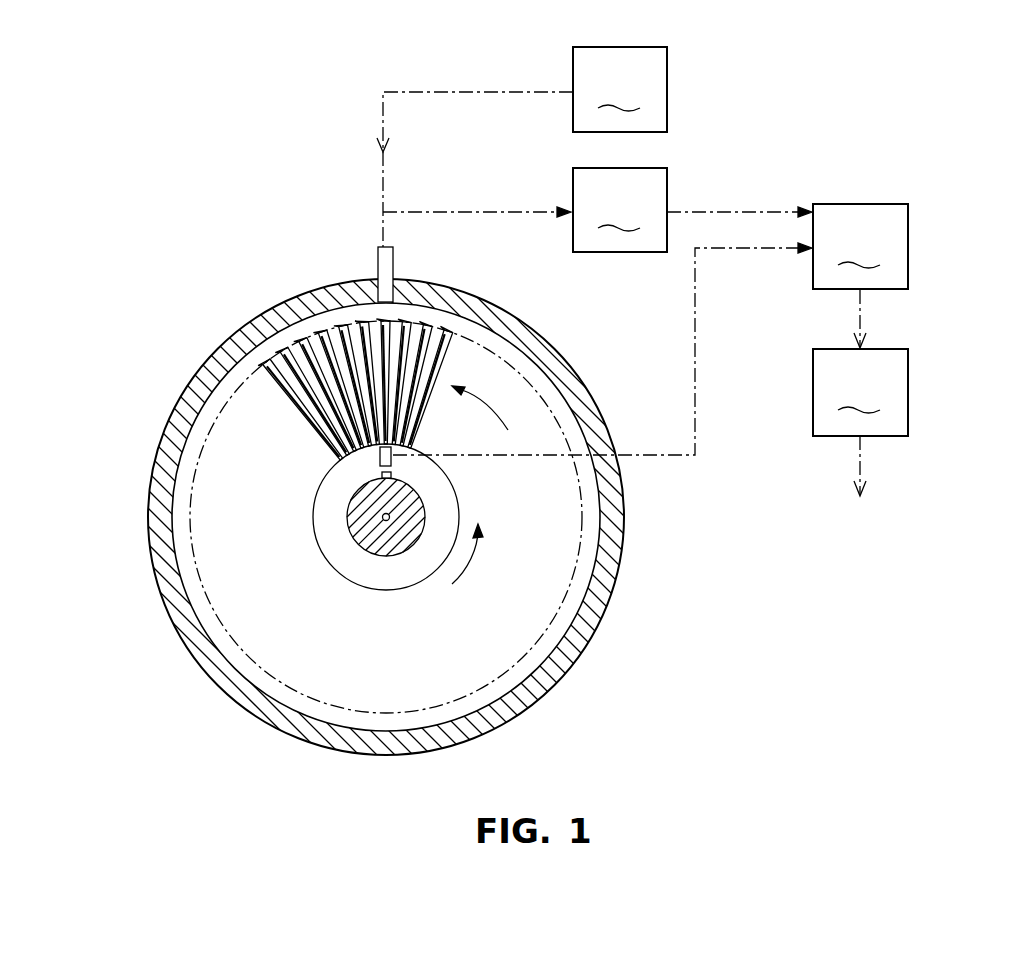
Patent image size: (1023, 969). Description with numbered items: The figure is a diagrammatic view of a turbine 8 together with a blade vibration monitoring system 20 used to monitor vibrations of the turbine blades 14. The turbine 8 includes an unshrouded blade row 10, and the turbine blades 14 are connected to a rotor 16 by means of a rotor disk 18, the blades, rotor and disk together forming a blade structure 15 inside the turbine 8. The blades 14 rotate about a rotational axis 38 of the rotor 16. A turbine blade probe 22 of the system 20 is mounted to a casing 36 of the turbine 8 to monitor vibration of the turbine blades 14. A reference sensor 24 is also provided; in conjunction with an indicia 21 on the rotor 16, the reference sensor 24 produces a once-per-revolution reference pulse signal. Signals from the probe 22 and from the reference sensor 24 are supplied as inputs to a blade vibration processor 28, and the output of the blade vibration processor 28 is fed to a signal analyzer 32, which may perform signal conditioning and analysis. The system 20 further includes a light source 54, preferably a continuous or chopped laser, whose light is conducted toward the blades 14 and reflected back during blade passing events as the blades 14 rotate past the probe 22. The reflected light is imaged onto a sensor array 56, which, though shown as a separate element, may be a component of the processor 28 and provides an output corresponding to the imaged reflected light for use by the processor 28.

The turbine 8 is at (391, 517).
The unshrouded blade row 10 is at (216, 396).
The turbine blades 14 is at (327, 422).
The blade structure 15 is at (492, 420).
The rotor 16 is at (352, 522).
The rotor disk 18 is at (350, 588).
The turbine blade vibration monitoring system 20 is at (698, 271).
The indicia 21 is at (393, 476).
The turbine blade probe 22 is at (366, 273).
The reference sensor 24 is at (378, 460).
The blade vibration processor 28 is at (860, 246).
The signal analyzer 32 is at (860, 392).
The casing 36 is at (623, 562).
The rotational axis 38 is at (390, 522).
The light source 54 is at (620, 89).
The sensor array 56 is at (620, 210).